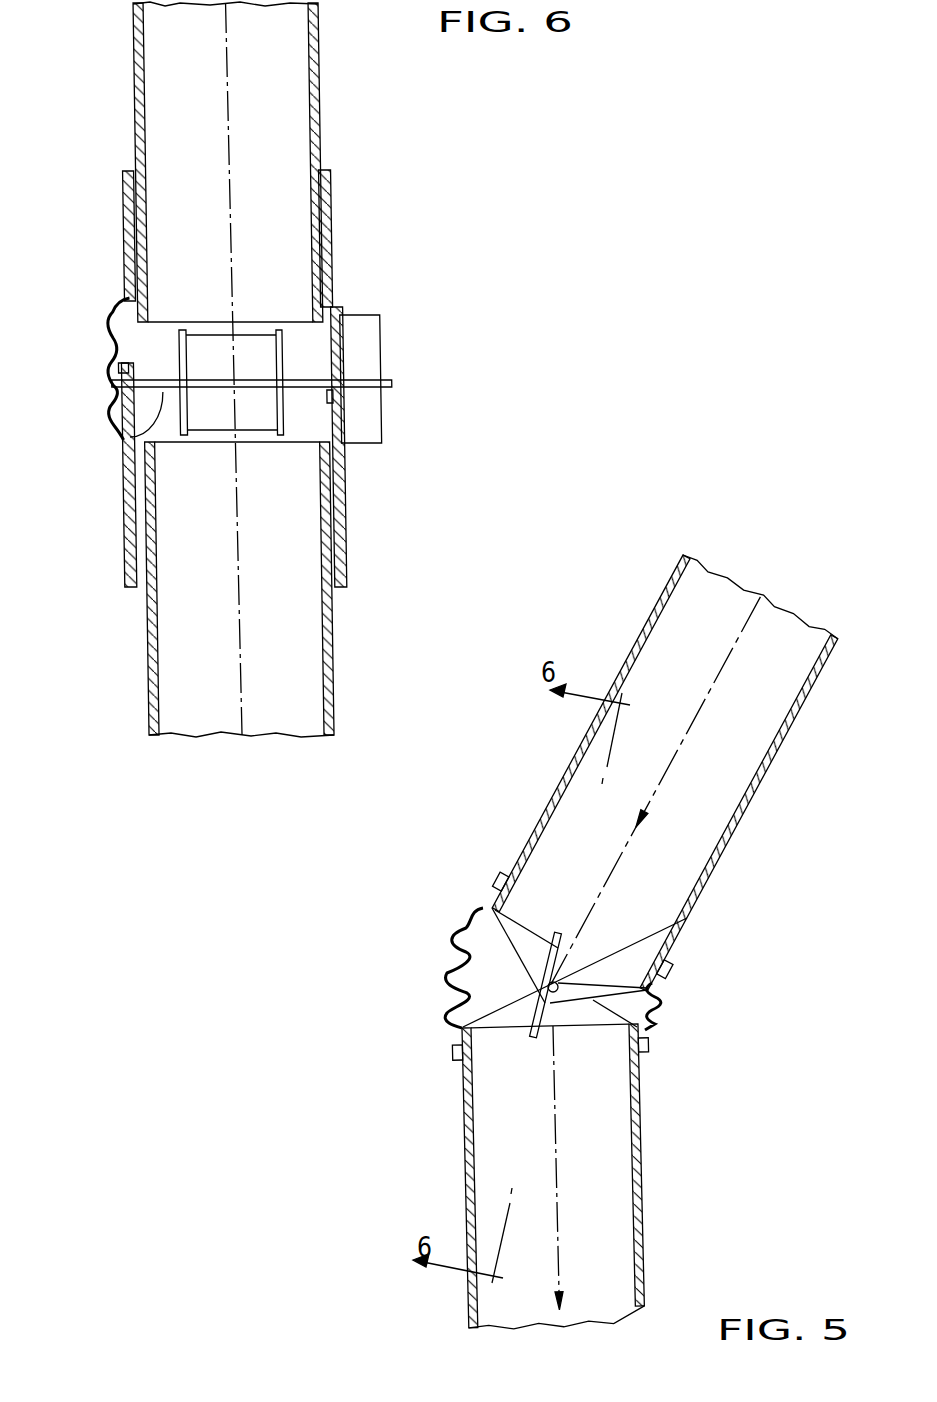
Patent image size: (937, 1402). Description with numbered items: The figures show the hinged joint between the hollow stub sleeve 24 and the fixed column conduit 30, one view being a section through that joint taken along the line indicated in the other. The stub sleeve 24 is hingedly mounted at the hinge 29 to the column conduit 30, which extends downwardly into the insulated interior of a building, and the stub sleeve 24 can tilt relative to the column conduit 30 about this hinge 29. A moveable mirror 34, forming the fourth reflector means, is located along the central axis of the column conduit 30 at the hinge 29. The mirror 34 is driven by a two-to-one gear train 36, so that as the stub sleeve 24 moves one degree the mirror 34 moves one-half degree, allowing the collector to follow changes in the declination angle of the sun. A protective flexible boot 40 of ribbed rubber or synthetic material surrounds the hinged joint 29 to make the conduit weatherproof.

In FIG. 6, the hollow stub sleeve 24 is at (317, 130).
In FIG. 5, the hollow stub sleeve 24 is at (652, 610).
In FIG. 6, the hinge 29 is at (114, 440).
In FIG. 5, the hinge 29 is at (687, 920).
In FIG. 6, the fixed column conduit 30 is at (323, 628).
In FIG. 5, the fixed column conduit 30 is at (463, 1197).
In FIG. 6, the moveable mirror 34 is at (246, 388).
In FIG. 5, the moveable mirror 34 is at (557, 957).
In FIG. 6, the 2 to 1 gear train 36 is at (362, 333).
In FIG. 6, the protective flexible boot 40 is at (98, 363).
In FIG. 5, the protective flexible boot 40 is at (663, 993).